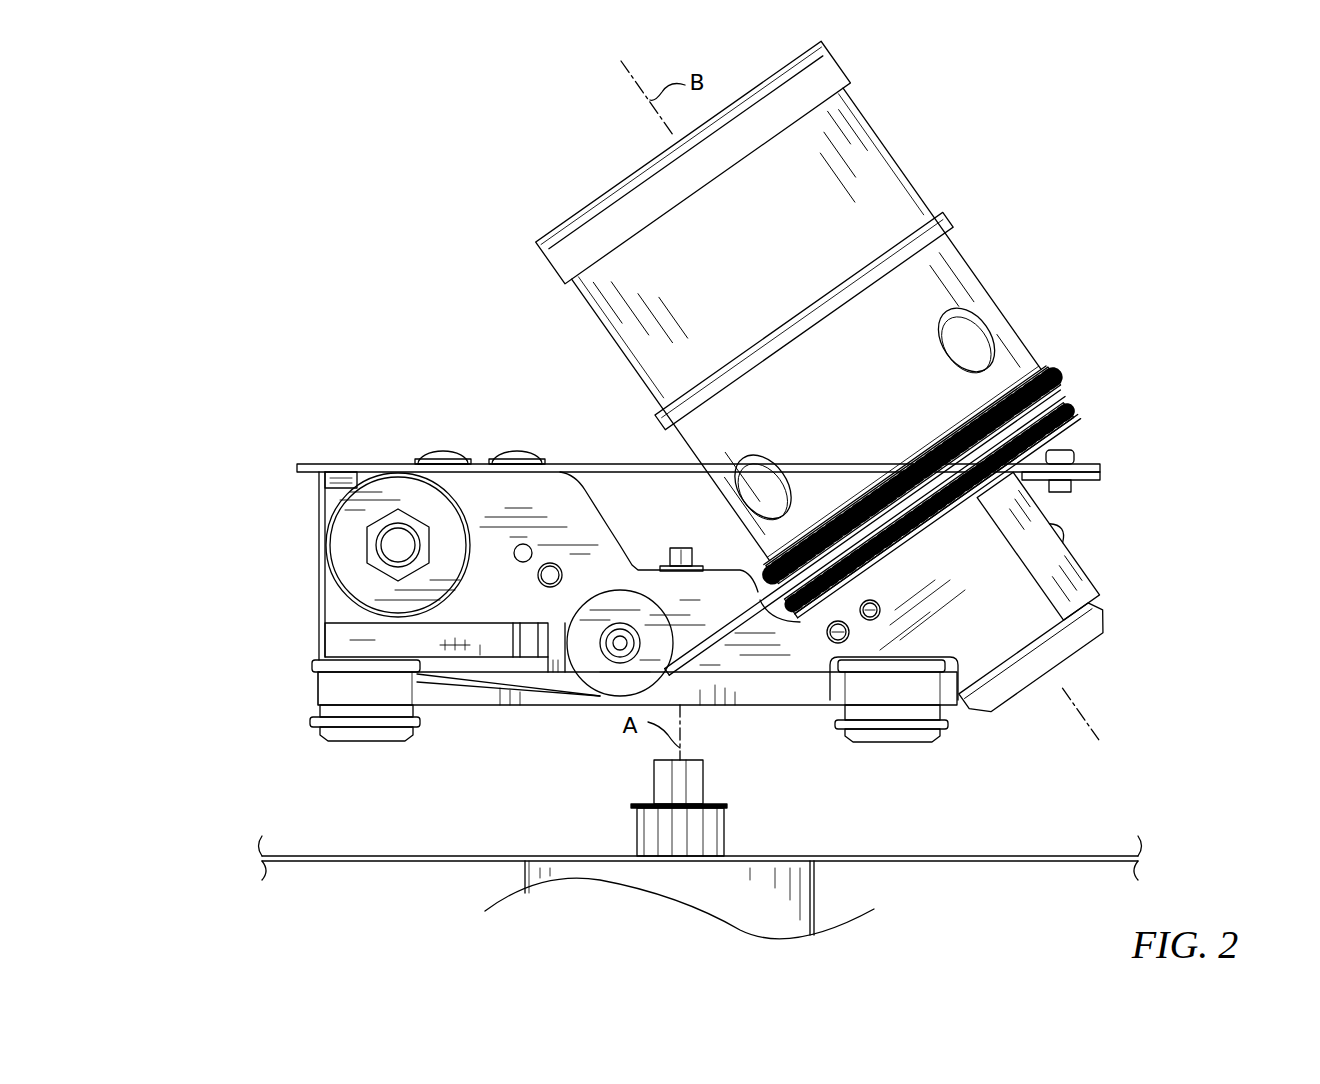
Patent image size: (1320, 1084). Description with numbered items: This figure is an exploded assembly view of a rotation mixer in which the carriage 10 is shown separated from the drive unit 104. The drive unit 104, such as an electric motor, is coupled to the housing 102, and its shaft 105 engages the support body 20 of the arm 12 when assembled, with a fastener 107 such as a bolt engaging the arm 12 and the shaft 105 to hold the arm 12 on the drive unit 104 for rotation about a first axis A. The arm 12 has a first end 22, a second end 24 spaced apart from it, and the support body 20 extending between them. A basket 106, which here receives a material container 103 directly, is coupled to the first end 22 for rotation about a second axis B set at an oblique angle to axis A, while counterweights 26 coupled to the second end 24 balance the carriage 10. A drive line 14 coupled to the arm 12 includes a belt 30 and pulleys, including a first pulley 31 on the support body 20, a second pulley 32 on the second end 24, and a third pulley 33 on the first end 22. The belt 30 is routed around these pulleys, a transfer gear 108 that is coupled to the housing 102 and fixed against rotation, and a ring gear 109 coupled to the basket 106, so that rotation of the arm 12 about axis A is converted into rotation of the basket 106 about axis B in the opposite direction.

The carriage 10 is at (288, 328).
The arm 12 is at (484, 495).
The drive line 14 is at (288, 707).
The support body 20 is at (745, 660).
The first end 22 is at (1092, 563).
The second end 24 is at (316, 487).
The counterweights 26 is at (350, 548).
The belt 30 is at (444, 706).
The first pulley 31 is at (610, 680).
The second pulley 32 is at (398, 750).
The third pulley 33 is at (895, 748).
The housing 102 is at (362, 856).
The material container 103 is at (896, 150).
The drive unit 104 is at (508, 880).
The shaft 105 is at (706, 787).
The basket 106 is at (1000, 266).
The fastener 107 is at (678, 540).
The transfer gear 108 is at (726, 840).
The ring gear 109 is at (1088, 416).